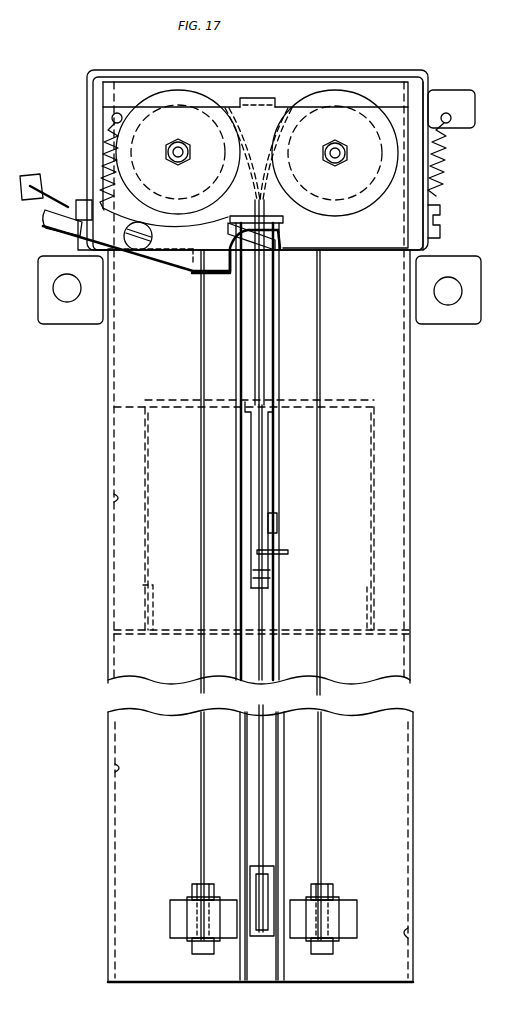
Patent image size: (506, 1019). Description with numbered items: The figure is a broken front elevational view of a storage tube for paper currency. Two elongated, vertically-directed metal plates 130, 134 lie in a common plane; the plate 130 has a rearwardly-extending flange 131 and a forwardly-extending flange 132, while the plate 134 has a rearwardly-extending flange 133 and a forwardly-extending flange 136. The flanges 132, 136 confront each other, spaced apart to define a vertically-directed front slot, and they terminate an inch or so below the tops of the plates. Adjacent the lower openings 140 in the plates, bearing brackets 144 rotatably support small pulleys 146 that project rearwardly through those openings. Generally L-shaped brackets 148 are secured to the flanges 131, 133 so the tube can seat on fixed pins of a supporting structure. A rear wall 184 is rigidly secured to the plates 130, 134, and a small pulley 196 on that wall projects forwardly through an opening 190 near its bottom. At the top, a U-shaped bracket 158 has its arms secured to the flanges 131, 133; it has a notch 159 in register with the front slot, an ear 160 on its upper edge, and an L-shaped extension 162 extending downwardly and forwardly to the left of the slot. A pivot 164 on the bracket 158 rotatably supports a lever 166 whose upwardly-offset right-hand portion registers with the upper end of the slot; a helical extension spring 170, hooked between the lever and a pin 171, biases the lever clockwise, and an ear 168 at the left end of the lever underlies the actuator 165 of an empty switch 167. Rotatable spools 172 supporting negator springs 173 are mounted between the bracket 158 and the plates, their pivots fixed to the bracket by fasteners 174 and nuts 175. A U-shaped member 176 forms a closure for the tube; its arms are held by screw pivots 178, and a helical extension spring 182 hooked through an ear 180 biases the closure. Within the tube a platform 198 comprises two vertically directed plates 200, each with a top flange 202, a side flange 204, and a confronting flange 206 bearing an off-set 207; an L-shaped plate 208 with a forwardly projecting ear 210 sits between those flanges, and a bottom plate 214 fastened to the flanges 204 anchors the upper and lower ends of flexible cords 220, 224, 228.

The metal plate 130 is at (122, 652).
The rearwardly-extending flange 131 is at (112, 500).
The forwardly-extending flange 132 is at (241, 672).
The rearwardly-extending flange 133 is at (412, 934).
The metal plate 134 is at (398, 544).
The forwardly-extending flange 136 is at (283, 674).
The opening 140 is at (198, 885).
The bearing bracket 144 is at (180, 934).
The small pulley 146 is at (200, 952).
The bracket 148 is at (72, 322).
The U-shaped bracket 158 is at (392, 118).
The notch 159 is at (267, 225).
The ear 160 is at (248, 99).
The L-shaped extension 162 is at (195, 276).
The pivot 164 is at (140, 250).
The actuator 165 is at (50, 195).
The lever 166 is at (180, 236).
The empty switch 167 is at (36, 175).
The ear 168 is at (62, 229).
The helical extension spring 170 is at (112, 142).
The pin 171 is at (112, 117).
The rotatable spool 172 is at (160, 97).
The negator spring 173 is at (256, 366).
The fastener 174 is at (178, 146).
The nut 175 is at (189, 158).
The U-shaped member 176 is at (366, 75).
The pivot 178 is at (436, 213).
The ear 180 is at (458, 100).
The helical extension spring 182 is at (440, 162).
The rear wall 184 is at (278, 794).
The opening 190 is at (268, 872).
The small pulley 196 is at (258, 894).
The platform 198 is at (340, 628).
The vertically directed plate 200 is at (160, 469).
The top flange 202 is at (160, 400).
The side flange 204 is at (142, 444).
The flange 206 is at (252, 464).
The off-set 207 is at (252, 575).
The L-shaped plate 208 is at (272, 574).
The ear 210 is at (283, 551).
The bottom plate 214 is at (172, 639).
The flexible cord 220 is at (201, 522).
The flexible cord 224 is at (321, 516).
The flexible cord 228 is at (262, 780).